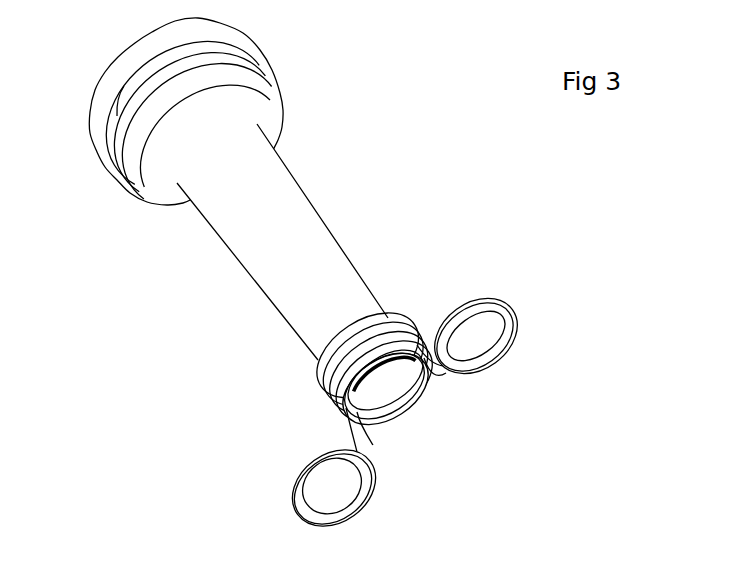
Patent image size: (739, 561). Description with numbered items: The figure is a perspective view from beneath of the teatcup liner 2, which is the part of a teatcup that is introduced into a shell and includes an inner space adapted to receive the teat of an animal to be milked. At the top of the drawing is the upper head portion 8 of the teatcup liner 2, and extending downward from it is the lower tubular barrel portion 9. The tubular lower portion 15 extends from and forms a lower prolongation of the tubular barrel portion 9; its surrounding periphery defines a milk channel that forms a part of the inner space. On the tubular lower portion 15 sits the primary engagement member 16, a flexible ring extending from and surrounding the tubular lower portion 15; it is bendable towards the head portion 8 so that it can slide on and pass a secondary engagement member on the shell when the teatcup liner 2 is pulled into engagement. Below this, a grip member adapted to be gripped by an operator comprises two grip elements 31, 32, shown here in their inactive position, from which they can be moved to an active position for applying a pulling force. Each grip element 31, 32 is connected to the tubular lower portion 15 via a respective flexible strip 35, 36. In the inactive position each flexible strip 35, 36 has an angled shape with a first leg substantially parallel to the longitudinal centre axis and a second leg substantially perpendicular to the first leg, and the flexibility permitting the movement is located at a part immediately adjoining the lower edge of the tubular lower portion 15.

The teatcup liner 2 is at (344, 274).
The upper head portion 8 is at (213, 32).
The lower tubular barrel portion 9 is at (315, 243).
The tubular lower portion 15 is at (343, 378).
The primary engagement member 16 is at (408, 316).
The grip element 31 is at (510, 347).
The grip element 32 is at (367, 495).
The flexible strip 35 is at (445, 368).
The flexible strip 36 is at (373, 440).